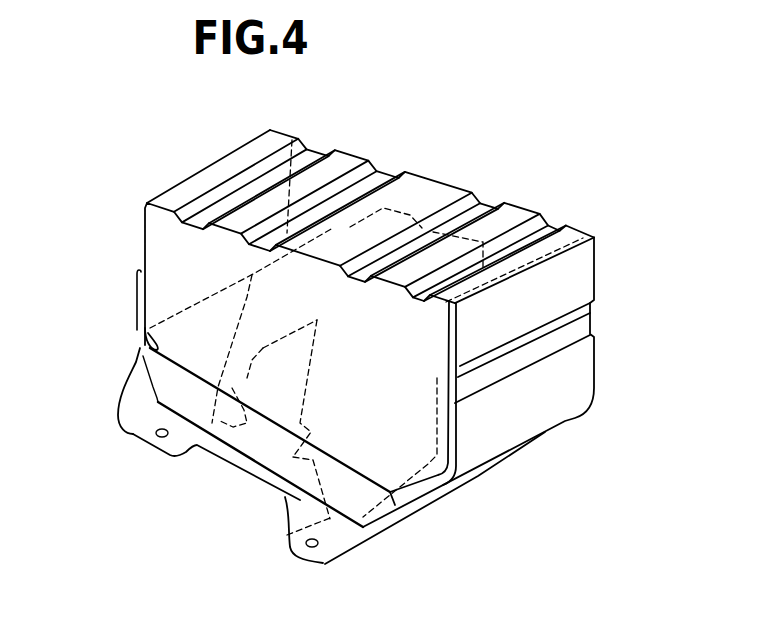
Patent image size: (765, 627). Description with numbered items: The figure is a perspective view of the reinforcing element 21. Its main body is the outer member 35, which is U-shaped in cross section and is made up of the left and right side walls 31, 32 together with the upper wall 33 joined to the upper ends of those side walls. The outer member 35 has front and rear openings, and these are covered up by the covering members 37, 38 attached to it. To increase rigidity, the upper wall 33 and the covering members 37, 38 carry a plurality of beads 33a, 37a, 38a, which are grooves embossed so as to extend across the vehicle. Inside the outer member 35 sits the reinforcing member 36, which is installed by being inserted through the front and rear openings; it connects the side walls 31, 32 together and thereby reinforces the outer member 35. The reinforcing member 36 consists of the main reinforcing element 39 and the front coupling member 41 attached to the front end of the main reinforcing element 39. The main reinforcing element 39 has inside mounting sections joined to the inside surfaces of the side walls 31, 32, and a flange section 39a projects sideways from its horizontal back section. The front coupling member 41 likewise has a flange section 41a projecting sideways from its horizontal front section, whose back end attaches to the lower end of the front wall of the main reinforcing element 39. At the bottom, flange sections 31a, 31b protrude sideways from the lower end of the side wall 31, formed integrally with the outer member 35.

The reinforcing element 21 is at (185, 133).
The side wall 31 is at (172, 267).
The flange section 31a is at (142, 430).
The flange section 31b is at (342, 533).
The side wall 32 is at (543, 223).
The upper wall 33 is at (318, 168).
The bead 33a is at (373, 180).
The outer member 35 is at (436, 178).
The reinforcing member 36 is at (412, 212).
The covering member 37 is at (173, 183).
The bead 37a is at (133, 245).
The covering member 38 is at (573, 275).
The bead 38a is at (553, 337).
The main reinforcing element 39 is at (283, 437).
The flange section 39a is at (363, 535).
The front coupling member 41 is at (187, 300).
The flange section 41a is at (127, 413).